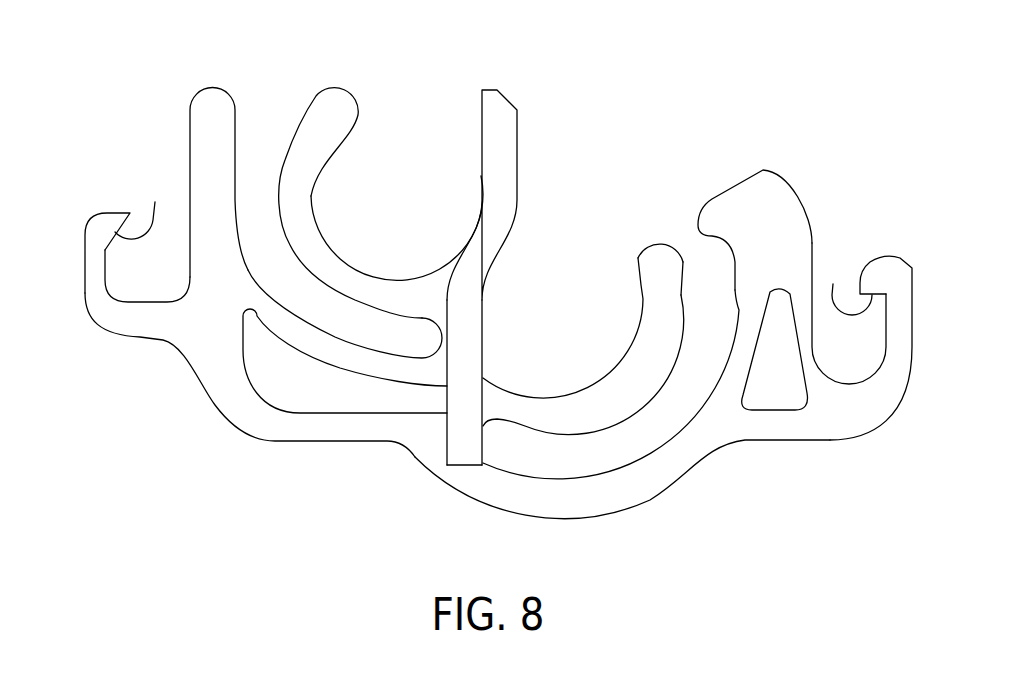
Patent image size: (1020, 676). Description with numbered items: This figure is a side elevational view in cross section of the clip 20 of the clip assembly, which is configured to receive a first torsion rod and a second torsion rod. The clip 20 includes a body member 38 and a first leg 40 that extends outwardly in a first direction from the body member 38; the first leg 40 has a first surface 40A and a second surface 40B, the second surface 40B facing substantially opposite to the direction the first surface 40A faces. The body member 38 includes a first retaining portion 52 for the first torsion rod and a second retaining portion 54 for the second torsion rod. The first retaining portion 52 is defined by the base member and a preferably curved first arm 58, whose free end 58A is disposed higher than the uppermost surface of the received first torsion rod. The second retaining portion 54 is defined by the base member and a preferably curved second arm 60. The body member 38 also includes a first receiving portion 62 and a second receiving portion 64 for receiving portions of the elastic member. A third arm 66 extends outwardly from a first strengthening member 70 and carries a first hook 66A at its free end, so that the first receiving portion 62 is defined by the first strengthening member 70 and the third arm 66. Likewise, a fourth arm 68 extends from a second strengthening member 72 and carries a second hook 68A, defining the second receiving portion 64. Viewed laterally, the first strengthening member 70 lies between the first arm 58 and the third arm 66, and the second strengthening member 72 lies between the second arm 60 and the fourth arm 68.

The clip 20 is at (334, 441).
The body member 38 is at (590, 520).
The first leg 40 is at (446, 446).
The first surface 40A is at (446, 398).
The second surface 40B is at (500, 377).
The first retaining portion 52 is at (583, 391).
The second retaining portion 54 is at (371, 281).
The first arm 58 is at (640, 332).
The free end 58A is at (660, 244).
The second arm 60 is at (340, 89).
The first receiving portion 62 is at (853, 383).
The second receiving portion 64 is at (145, 301).
The third arm 66 is at (913, 296).
The first hook 66A is at (833, 285).
The fourth arm 68 is at (84, 260).
The second hook 68A is at (155, 202).
The first strengthening member 70 is at (765, 170).
The second strengthening member 72 is at (211, 88).